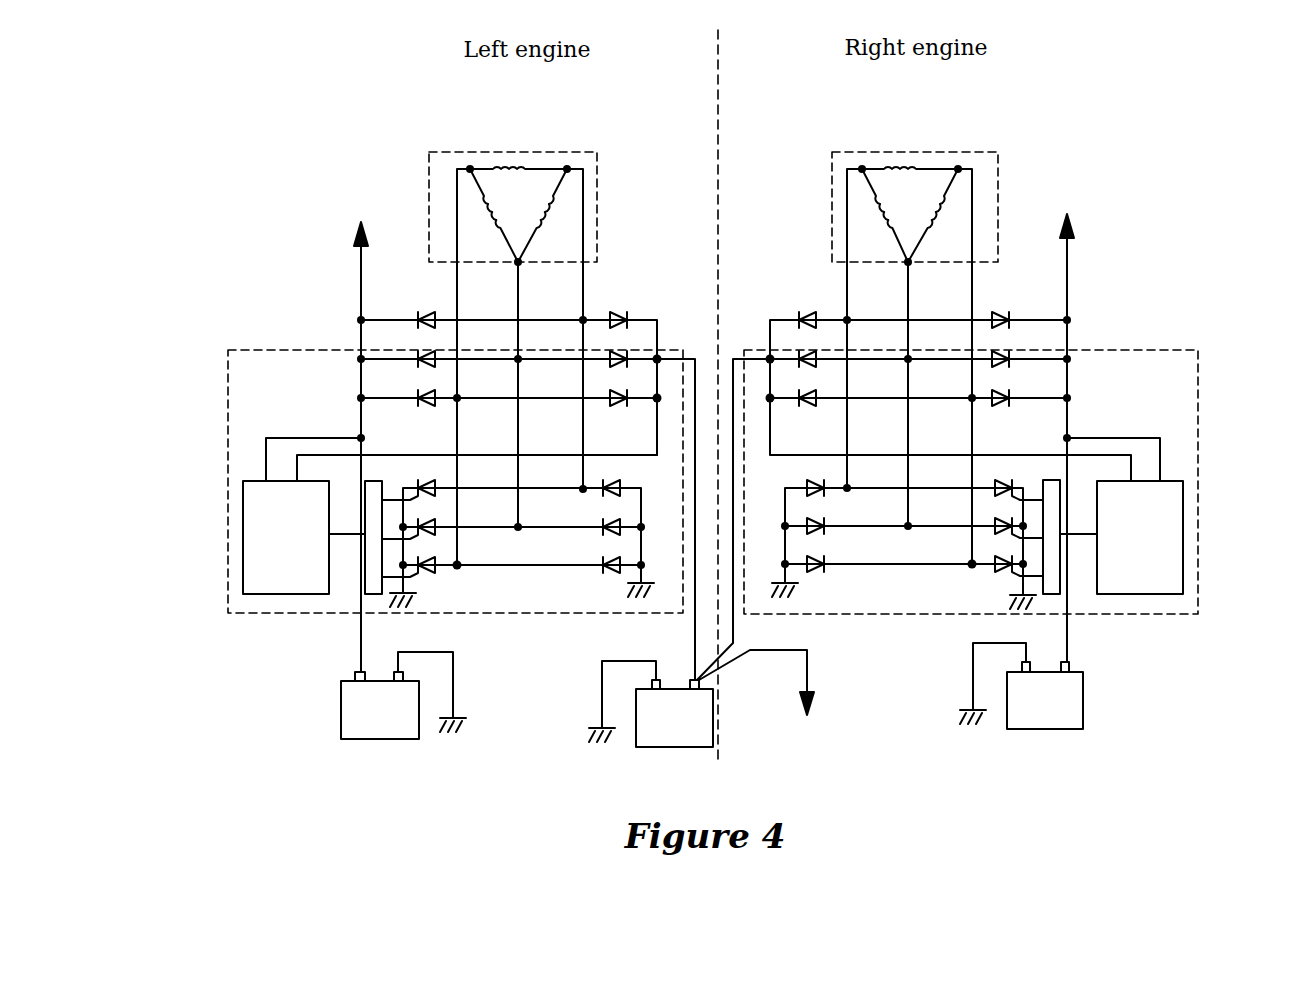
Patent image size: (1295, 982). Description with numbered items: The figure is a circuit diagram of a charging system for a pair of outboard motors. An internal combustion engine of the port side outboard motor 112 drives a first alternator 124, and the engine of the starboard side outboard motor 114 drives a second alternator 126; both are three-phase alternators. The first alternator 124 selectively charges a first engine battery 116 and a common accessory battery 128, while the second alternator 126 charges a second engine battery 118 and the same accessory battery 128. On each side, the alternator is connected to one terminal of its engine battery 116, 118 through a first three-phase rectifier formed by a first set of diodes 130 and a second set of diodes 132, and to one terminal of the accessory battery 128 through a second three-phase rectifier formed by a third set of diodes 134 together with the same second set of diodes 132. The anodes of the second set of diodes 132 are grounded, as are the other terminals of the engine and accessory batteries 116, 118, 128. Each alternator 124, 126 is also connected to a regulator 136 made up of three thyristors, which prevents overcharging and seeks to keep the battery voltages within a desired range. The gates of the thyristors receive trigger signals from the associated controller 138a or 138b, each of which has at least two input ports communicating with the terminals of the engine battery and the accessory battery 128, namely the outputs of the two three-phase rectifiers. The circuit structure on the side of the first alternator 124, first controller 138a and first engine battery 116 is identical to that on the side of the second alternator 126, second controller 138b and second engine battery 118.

The port side outboard motor 112 is at (452, 141).
The starboard side outboard motor 114 is at (857, 142).
The first alternator 124 is at (555, 165).
The second alternator 126 is at (945, 165).
The first set of diodes 130 is at (711, 342).
The second set of diodes 132 is at (735, 514).
The third set of diodes 134 is at (712, 342).
The regulator 136 is at (714, 516).
The first controller 138a is at (243, 560).
The second controller 138b is at (1183, 535).
The first engine battery 116 is at (341, 727).
The second engine battery 118 is at (1077, 720).
The accessory battery 128 is at (682, 738).